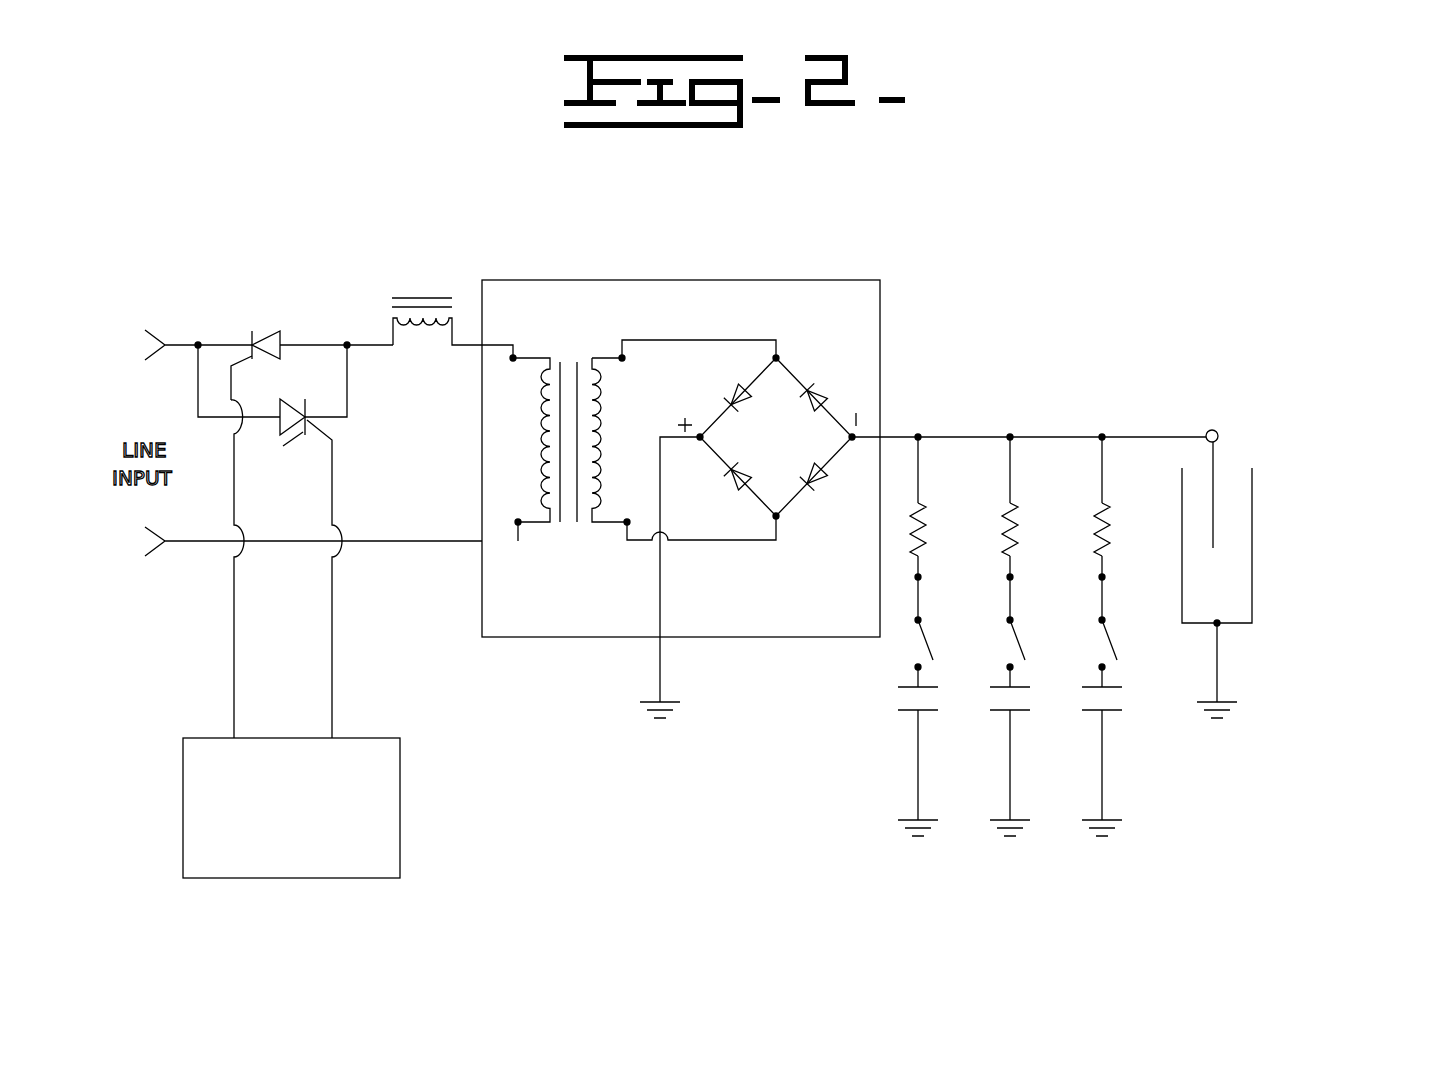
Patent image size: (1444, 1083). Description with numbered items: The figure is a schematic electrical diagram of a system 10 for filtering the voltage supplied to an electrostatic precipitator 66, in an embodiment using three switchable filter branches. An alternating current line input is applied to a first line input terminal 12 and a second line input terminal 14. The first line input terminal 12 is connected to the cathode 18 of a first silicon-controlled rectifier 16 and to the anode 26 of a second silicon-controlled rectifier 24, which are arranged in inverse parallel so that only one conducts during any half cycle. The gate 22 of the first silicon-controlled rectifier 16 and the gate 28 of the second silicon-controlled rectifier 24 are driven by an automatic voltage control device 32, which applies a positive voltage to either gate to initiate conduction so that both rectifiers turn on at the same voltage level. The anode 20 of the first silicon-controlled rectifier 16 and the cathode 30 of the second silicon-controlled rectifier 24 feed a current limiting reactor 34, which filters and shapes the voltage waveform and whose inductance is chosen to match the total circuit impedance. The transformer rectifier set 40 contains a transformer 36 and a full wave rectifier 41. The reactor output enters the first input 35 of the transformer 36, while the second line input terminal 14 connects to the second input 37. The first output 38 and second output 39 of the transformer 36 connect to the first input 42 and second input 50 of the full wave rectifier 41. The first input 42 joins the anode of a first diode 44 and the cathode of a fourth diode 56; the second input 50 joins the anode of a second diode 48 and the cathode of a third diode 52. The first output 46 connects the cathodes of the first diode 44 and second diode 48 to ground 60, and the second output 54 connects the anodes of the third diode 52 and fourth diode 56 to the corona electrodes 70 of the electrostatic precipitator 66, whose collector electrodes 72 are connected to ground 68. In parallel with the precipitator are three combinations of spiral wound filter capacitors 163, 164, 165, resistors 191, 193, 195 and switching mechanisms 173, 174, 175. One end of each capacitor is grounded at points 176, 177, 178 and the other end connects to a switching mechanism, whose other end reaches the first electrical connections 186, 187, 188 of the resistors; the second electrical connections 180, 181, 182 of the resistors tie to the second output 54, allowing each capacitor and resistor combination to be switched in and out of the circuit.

The system for filtering voltage for an electrostatic precipitator 10 is at (1027, 258).
The first line input terminal 12 is at (163, 345).
The second line input terminal 14 is at (163, 540).
The first silicon-controlled rectifier 16 is at (274, 316).
The cathode of first silicon-controlled rectifier 18 is at (251, 340).
The anode of first silicon-controlled rectifier 20 is at (279, 337).
The gate of first silicon-controlled rectifier 22 is at (232, 388).
The second silicon-controlled rectifier 24 is at (294, 434).
The anode of second silicon-controlled rectifier 26 is at (283, 446).
The gate of second silicon-controlled rectifier 28 is at (332, 464).
The cathode of second silicon-controlled rectifier 30 is at (312, 421).
The automatic voltage control device 32 is at (378, 738).
The current limiting reactor 34 is at (417, 293).
The first input for the transformer 35 is at (517, 357).
The transformer 36 is at (524, 335).
The second input for the transformer 37 is at (520, 526).
The first output for the transformer 38 is at (624, 364).
The second output for the transformer 39 is at (627, 526).
The transformer rectifier set 40 is at (881, 290).
The full wave rectifier 41 is at (793, 463).
The first input for the full wave rectifier 42 is at (777, 356).
The first diode 44 is at (730, 386).
The first output for the full wave rectifier 46 is at (702, 443).
The second diode 48 is at (727, 490).
The second input for the full wave rectifier 50 is at (778, 520).
The third diode 52 is at (820, 487).
The second output for the full wave rectifier 54 is at (850, 443).
The fourth diode 56 is at (811, 383).
The ground 60 is at (664, 680).
The electrostatic precipitator 66 is at (1302, 568).
The ground 68 is at (1222, 697).
The corona electrodes 70 is at (1215, 460).
The collector electrodes 72 is at (1253, 600).
The spiral wound filter capacitor 163 is at (912, 718).
The spiral wound filter capacitor 164 is at (1004, 718).
The spiral wound filter capacitor 165 is at (1096, 718).
The switching mechanism 173 is at (934, 634).
The switching mechanism 174 is at (1026, 634).
The switching mechanism 175 is at (1118, 634).
The ground point 176 is at (930, 838).
The ground point 177 is at (1022, 838).
The ground point 178 is at (1114, 838).
The second electrical connection for the resistor 180 is at (914, 433).
The second electrical connection for the resistor 181 is at (1006, 433).
The second electrical connection for the resistor 182 is at (1098, 433).
The first electrical connection for the resistor 186 is at (919, 575).
The first electrical connection for the resistor 187 is at (1011, 575).
The first electrical connection for the resistor 188 is at (1103, 575).
The resistor 191 is at (925, 498).
The resistor 193 is at (1017, 498).
The resistor 195 is at (1109, 498).